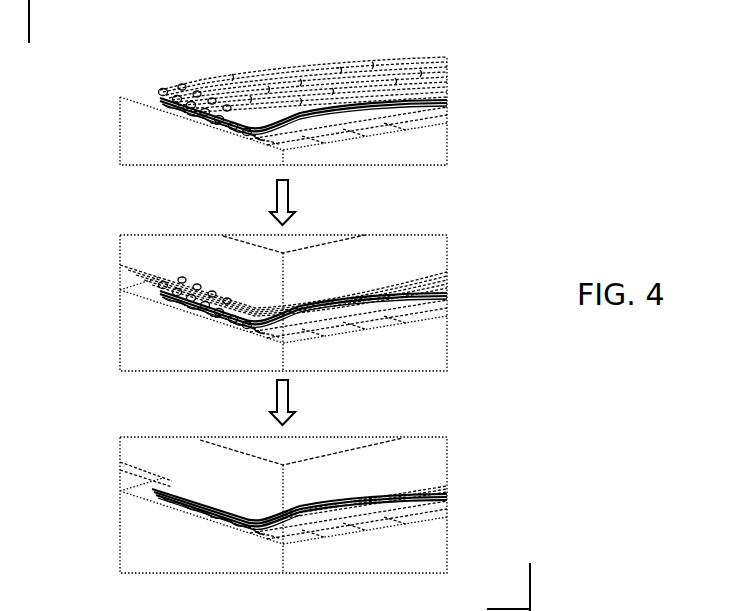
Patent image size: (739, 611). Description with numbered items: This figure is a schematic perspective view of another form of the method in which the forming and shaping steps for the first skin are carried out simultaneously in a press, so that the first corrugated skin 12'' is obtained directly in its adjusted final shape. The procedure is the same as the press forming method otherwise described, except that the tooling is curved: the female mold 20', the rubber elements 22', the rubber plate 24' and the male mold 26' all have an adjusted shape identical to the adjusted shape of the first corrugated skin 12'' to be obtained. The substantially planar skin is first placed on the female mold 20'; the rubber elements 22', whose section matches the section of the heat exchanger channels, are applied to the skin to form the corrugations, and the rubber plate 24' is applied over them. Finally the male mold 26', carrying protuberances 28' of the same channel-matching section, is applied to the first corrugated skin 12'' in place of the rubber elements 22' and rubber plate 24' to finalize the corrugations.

The first corrugated skin 12'' is at (255, 301).
The female mold 20' is at (254, 315).
The rubber elements 22' is at (278, 170).
The rubber plate 24' is at (281, 231).
The male mold 26' is at (302, 434).
The protuberances 28' is at (255, 484).